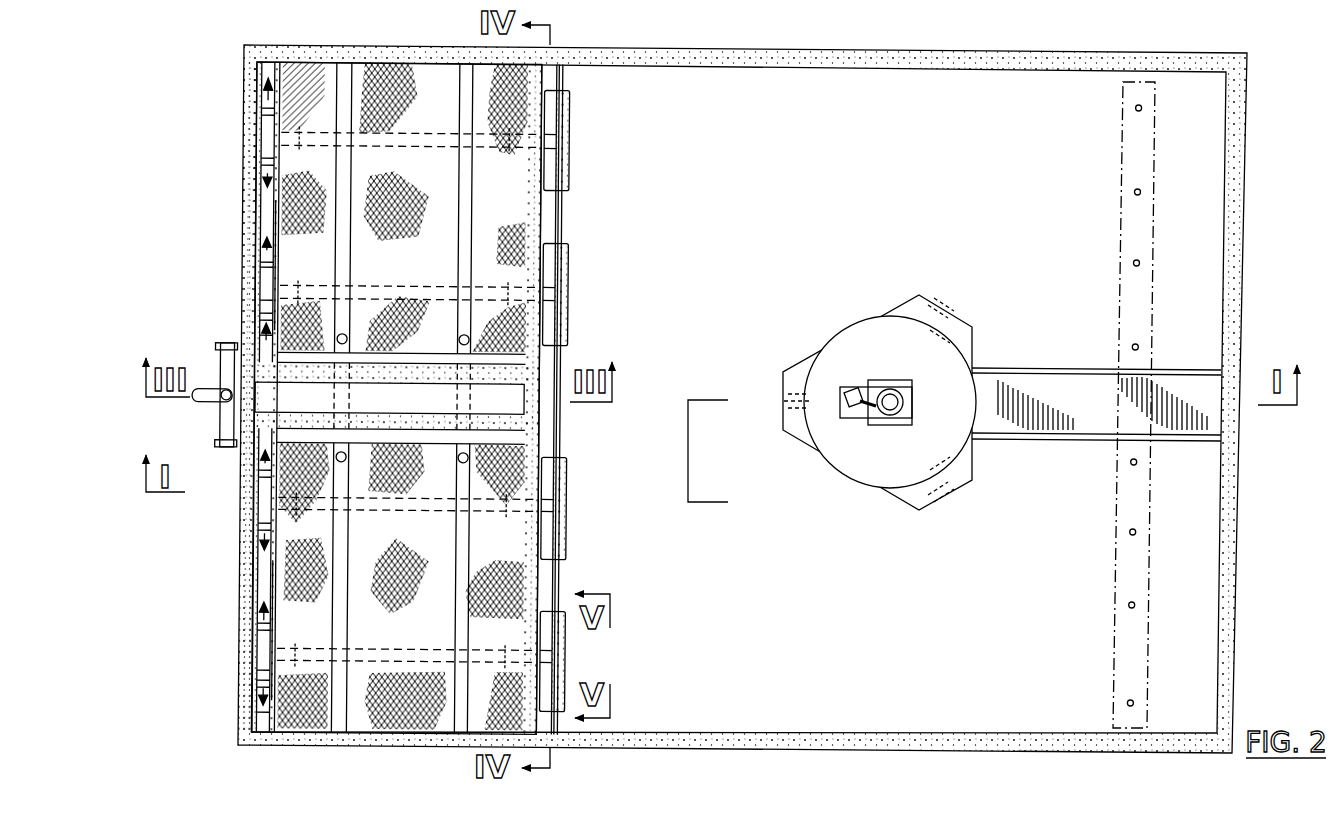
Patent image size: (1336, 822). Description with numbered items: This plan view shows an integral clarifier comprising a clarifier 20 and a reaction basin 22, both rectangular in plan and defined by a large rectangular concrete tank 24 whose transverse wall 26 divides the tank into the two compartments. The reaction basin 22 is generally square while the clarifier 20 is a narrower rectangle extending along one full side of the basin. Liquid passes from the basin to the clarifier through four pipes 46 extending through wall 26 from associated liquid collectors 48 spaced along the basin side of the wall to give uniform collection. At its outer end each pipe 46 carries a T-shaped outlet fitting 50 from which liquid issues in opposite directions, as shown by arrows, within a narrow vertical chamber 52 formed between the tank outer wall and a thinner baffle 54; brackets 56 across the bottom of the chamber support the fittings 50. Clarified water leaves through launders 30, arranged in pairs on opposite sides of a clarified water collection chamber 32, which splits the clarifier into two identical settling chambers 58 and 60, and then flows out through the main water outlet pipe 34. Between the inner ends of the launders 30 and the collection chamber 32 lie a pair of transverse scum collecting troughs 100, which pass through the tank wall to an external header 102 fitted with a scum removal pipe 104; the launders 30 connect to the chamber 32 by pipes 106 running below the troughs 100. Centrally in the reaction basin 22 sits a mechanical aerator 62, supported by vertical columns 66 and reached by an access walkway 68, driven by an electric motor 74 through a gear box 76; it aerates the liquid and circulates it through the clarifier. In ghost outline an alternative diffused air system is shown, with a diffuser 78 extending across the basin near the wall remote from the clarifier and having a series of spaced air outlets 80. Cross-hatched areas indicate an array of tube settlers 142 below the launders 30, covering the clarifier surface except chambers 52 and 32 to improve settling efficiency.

The clarifier 20 is at (502, 131).
The reaction basin 22 is at (817, 591).
The tank 24 is at (238, 622).
The transverse wall 26 is at (545, 437).
The launders 30 is at (462, 95).
The collection chamber 32 is at (457, 378).
The main water outlet pipe 34 is at (205, 401).
The pipes 46 is at (432, 140).
The liquid collectors 48 is at (576, 165).
The T-shaped outlet fitting 50 is at (262, 130).
The vertical chamber 52 is at (262, 228).
The inner wall or baffle 54 is at (275, 274).
The brackets 56 is at (262, 318).
The settling chamber 58 is at (300, 583).
The settling chamber 60 is at (300, 179).
The mechanical aerator 62 is at (918, 401).
The vertical columns 66 is at (948, 313).
The access walkway 68 is at (1025, 367).
The electric motor 74 is at (853, 408).
The gear box 76 is at (893, 408).
The diffuser 78 is at (1133, 153).
The air outlets 80 is at (1130, 465).
The scum collecting troughs 100 is at (405, 360).
The header 102 is at (232, 420).
The scum removal pipe 104 is at (228, 390).
The pipes 106 is at (342, 362).
The tube settlers 142 is at (438, 197).